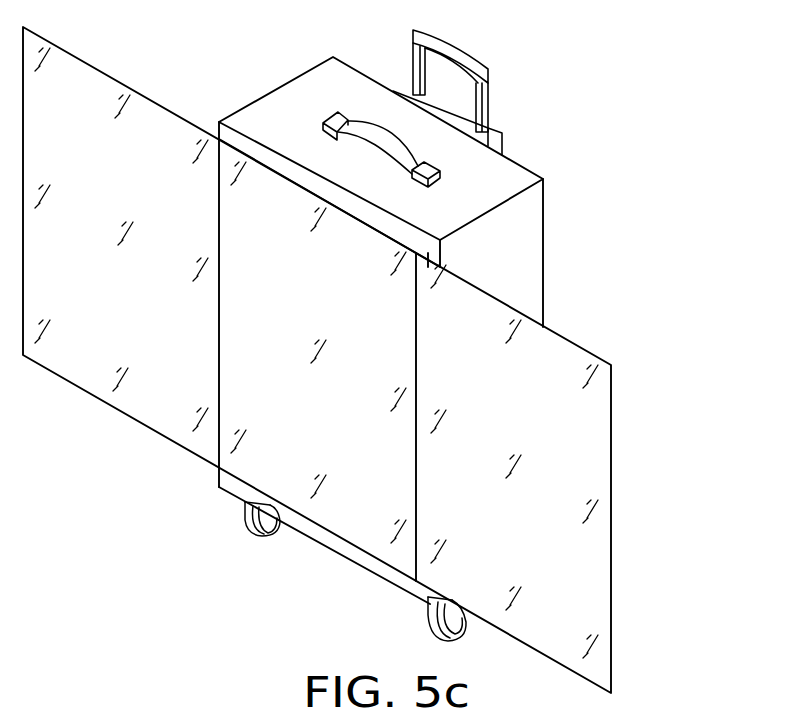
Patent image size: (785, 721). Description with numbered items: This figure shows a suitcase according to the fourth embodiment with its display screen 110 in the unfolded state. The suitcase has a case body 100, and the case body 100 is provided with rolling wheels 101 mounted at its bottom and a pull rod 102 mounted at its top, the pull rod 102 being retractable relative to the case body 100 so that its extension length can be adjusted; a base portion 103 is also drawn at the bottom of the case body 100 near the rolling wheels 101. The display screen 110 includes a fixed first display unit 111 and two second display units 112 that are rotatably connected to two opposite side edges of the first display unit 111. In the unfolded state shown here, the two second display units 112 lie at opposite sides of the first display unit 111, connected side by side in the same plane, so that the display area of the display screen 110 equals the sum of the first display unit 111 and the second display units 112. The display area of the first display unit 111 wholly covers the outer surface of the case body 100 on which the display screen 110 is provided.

The case body 100 is at (565, 255).
The rolling wheels 101 is at (430, 614).
The pull rod 102 is at (487, 102).
The base plate 103 is at (346, 547).
The display screen 110 is at (698, 324).
The first display unit 111 is at (387, 485).
The second display unit 112 is at (183, 355).